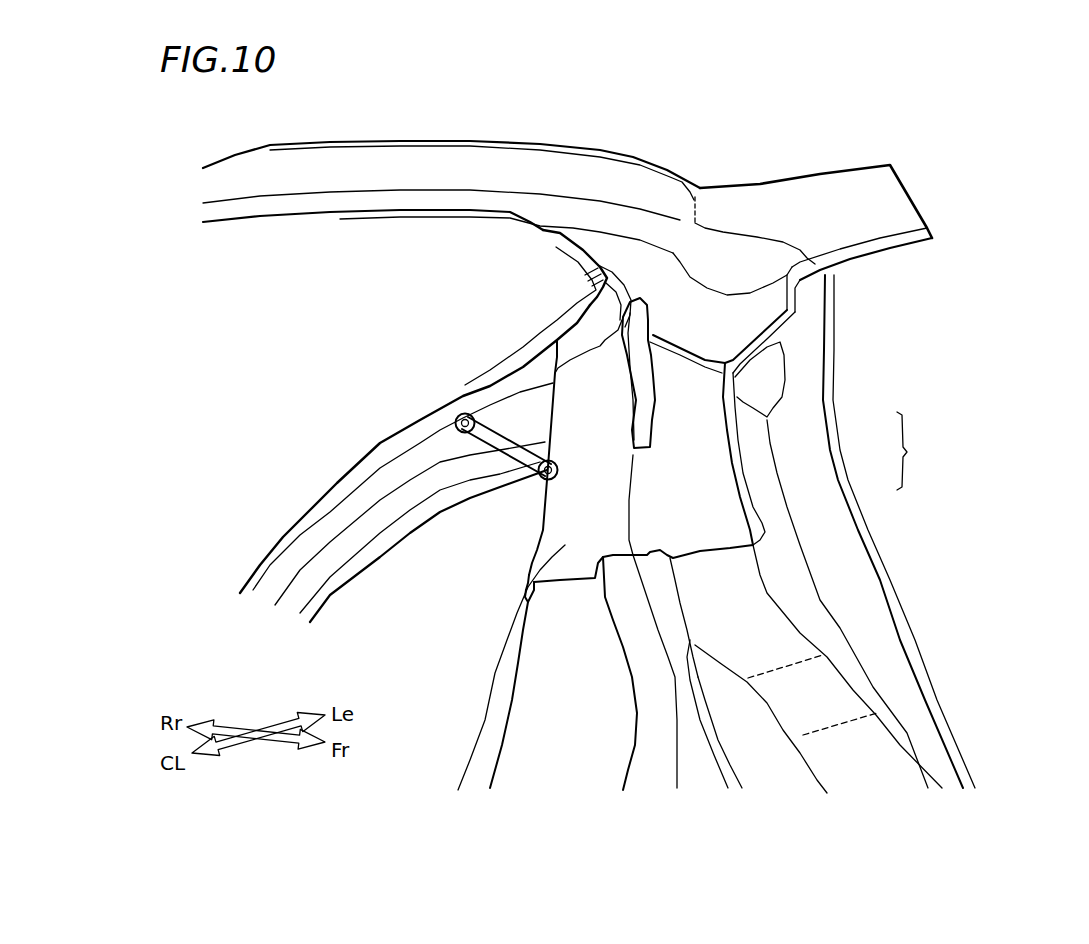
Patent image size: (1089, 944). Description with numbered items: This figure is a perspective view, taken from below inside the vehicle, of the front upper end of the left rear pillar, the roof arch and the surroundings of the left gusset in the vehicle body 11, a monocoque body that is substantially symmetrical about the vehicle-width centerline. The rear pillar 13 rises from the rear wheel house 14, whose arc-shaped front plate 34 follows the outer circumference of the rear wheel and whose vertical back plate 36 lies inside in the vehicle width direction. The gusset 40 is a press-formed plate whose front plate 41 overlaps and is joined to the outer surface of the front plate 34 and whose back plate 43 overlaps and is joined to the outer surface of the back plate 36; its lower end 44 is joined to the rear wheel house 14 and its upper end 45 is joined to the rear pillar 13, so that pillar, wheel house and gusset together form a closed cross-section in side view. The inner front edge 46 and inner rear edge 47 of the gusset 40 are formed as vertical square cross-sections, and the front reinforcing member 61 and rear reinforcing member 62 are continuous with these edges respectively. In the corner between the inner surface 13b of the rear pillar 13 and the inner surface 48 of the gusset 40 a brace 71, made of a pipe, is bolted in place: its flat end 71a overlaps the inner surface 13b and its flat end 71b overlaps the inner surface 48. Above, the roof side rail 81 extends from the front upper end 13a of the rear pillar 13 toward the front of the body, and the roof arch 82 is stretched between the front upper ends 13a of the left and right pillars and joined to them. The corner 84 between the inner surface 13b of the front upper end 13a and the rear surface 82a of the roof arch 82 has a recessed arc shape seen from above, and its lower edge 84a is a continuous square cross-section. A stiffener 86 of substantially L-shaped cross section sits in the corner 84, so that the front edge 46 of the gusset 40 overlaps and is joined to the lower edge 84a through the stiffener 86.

The vehicle body 11 is at (1033, 159).
The rear pillar 13 is at (388, 463).
The front upper end of rear pillar 13a is at (415, 449).
The inner surface of rear pillar 13b is at (405, 536).
The rear wheel house 14 is at (511, 802).
The front plate of rear wheel house 34 is at (782, 739).
The back plate of rear wheel house 36 is at (575, 801).
The gusset 40 is at (799, 531).
The front plate of gusset 41 is at (820, 575).
The back plate of gusset 43 is at (799, 531).
The lower end of gusset 44 is at (643, 611).
The upper end of gusset 45 is at (518, 447).
The front edge of gusset 46 is at (661, 621).
The rear edge of gusset 47 is at (506, 552).
The inner surface of gusset 48 is at (496, 590).
The front reinforcing member 61 is at (607, 673).
The rear reinforcing member 62 is at (490, 667).
The brace 71 is at (490, 455).
The end of brace 71a is at (422, 406).
The end of brace 71b is at (575, 455).
The roof side rail 81 is at (802, 213).
The roof arch 82 is at (451, 143).
The rear surface of roof arch 82a is at (441, 223).
The corner 84 is at (536, 307).
The lower edge of corner 84a is at (566, 296).
The stiffener 86 is at (659, 373).